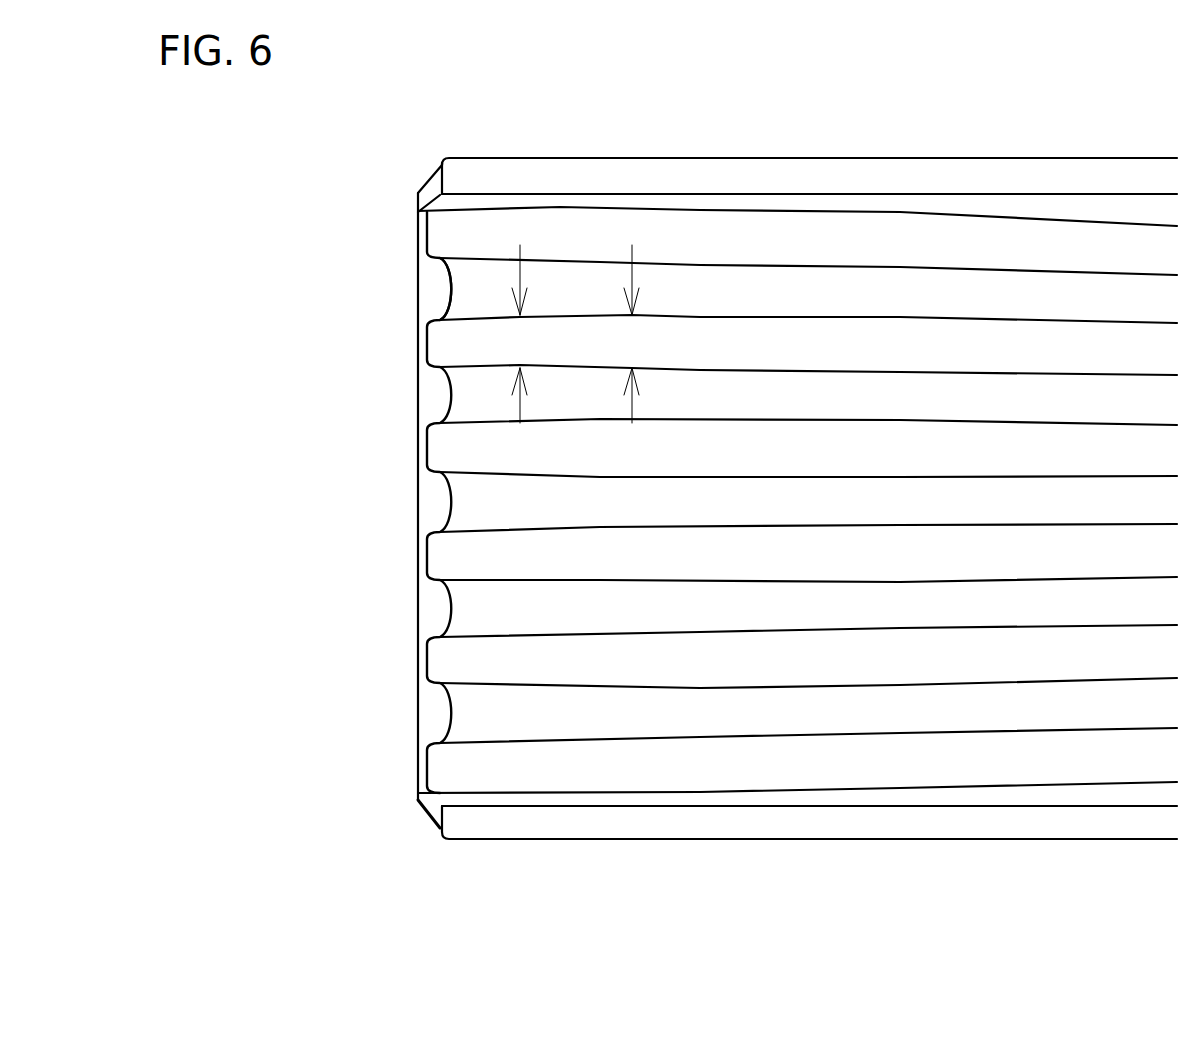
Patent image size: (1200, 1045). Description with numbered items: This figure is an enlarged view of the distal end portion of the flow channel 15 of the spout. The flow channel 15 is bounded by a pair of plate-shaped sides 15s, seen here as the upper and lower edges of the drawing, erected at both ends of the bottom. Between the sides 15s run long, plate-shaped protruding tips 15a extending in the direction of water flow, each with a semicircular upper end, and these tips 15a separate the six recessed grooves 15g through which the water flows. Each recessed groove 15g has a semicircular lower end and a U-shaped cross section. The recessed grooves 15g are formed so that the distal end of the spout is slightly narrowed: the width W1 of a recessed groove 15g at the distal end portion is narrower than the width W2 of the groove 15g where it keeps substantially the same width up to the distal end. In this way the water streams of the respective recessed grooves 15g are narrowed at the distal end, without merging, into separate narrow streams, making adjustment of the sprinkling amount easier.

The flow channel 15 is at (947, 137).
The sides 15s is at (583, 173).
The protruding tips 15a is at (753, 290).
The recessed grooves 15g is at (470, 237).
The width of the recessed groove at the distal end portion W1 is at (513, 334).
The width of the recessed groove W2 is at (626, 334).